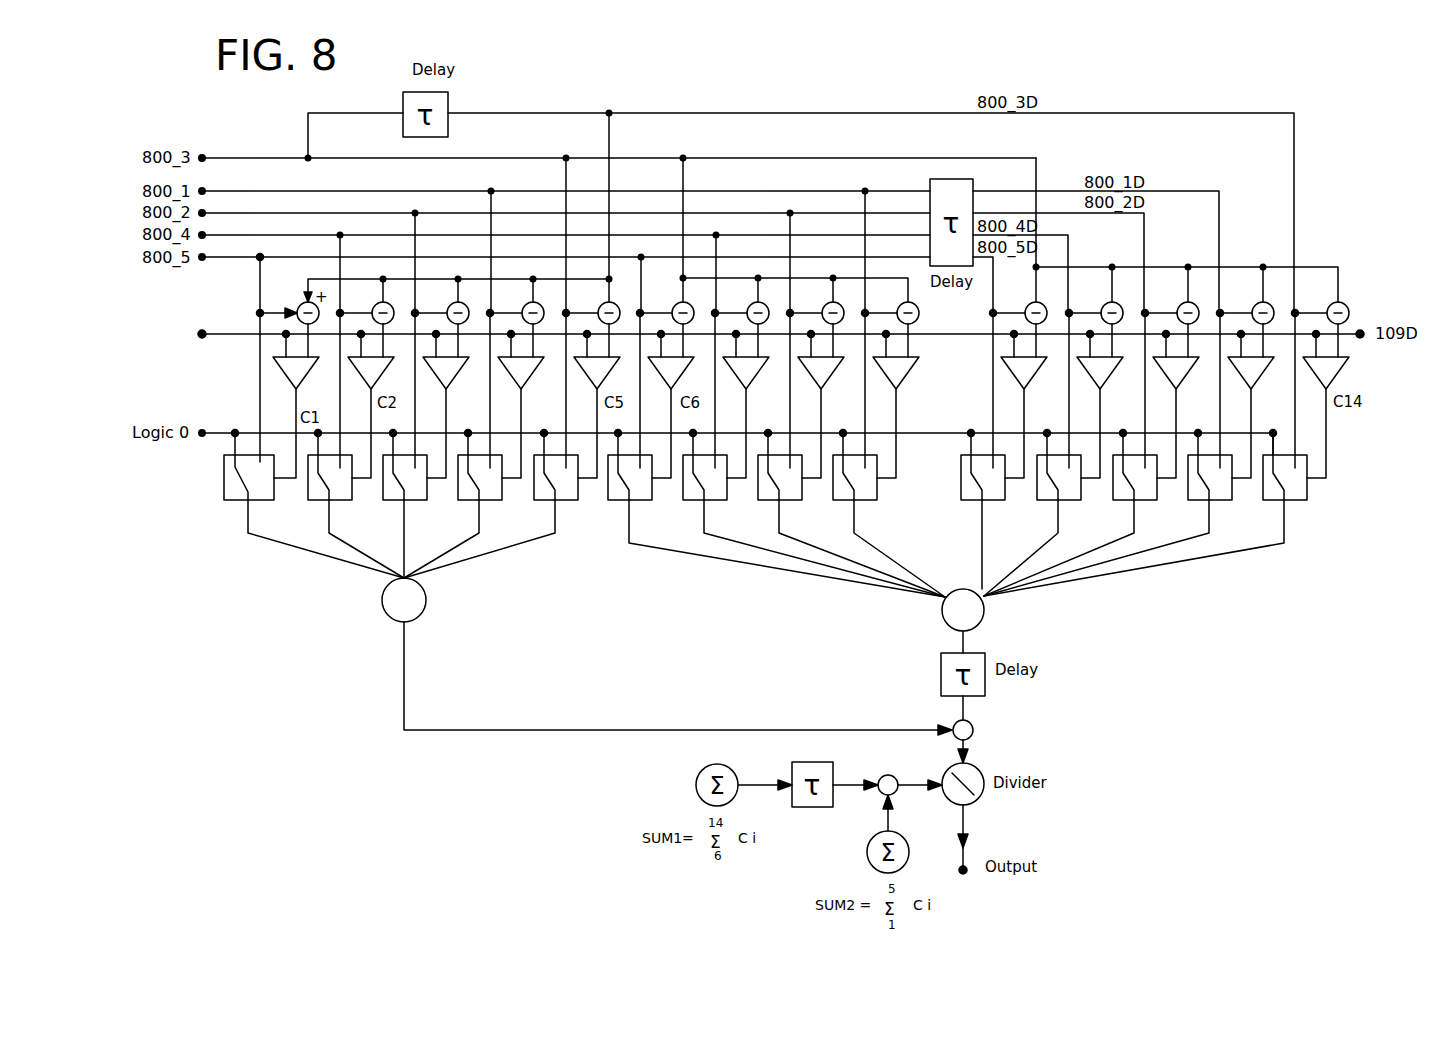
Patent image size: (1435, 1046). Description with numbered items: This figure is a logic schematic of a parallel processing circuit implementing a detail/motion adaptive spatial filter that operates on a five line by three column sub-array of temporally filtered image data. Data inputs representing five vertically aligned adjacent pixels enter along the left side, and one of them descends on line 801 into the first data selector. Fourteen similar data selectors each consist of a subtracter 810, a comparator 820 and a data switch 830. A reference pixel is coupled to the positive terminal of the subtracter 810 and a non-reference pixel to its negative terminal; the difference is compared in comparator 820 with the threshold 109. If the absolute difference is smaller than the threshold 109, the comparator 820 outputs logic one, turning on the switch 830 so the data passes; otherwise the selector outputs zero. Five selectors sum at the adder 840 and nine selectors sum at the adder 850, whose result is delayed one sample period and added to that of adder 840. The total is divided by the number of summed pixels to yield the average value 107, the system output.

The input signal line 800_5 801 is at (242, 358).
The subtracter 810 is at (289, 308).
The comparator 820 is at (295, 401).
The data switch 830 is at (314, 504).
The adder 840 is at (425, 600).
The adder 850 is at (983, 610).
The threshold 109 is at (763, 333).
The average value 107 is at (979, 861).